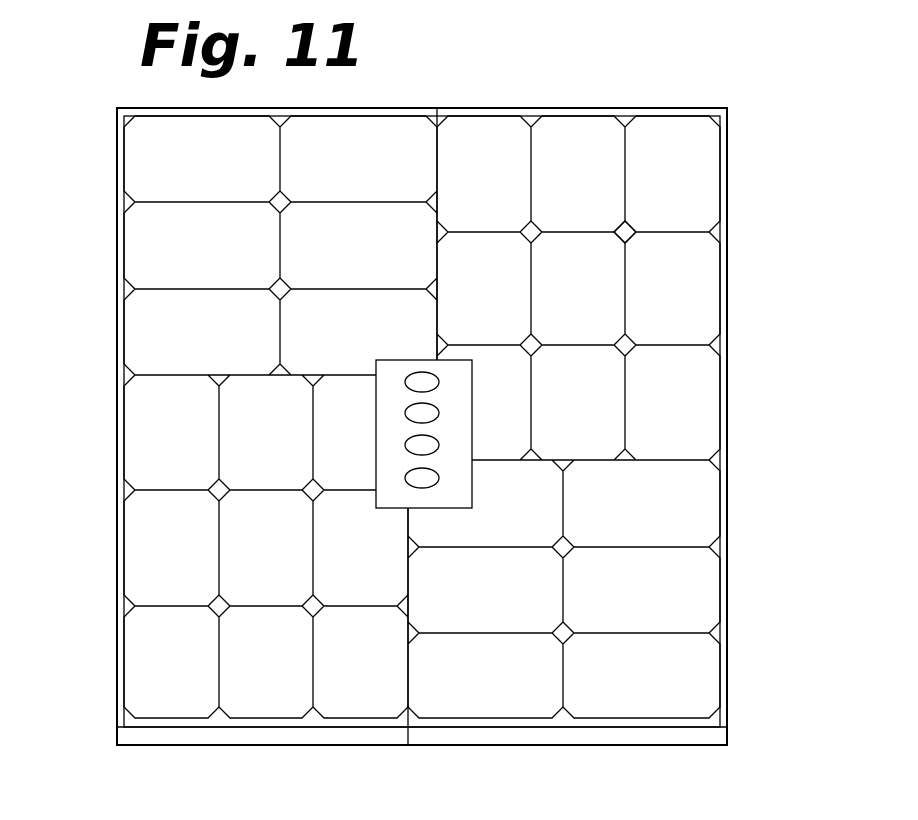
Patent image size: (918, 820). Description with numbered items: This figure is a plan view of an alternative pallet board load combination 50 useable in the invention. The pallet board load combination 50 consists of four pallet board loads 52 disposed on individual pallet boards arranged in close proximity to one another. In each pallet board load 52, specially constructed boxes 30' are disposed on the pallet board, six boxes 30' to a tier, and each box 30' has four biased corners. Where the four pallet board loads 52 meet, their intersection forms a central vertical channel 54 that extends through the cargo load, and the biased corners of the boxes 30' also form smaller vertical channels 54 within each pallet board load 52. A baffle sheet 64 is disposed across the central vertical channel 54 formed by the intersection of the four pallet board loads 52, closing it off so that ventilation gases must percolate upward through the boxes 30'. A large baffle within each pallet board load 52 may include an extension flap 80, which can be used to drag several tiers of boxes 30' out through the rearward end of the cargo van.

The pallet board load combination 50 is at (752, 263).
The pallet board load 52 is at (122, 320).
The vertical channel 54 is at (628, 230).
The box 30' is at (422, 447).
The baffle sheet 64 is at (473, 431).
The extension flap 80 is at (363, 746).